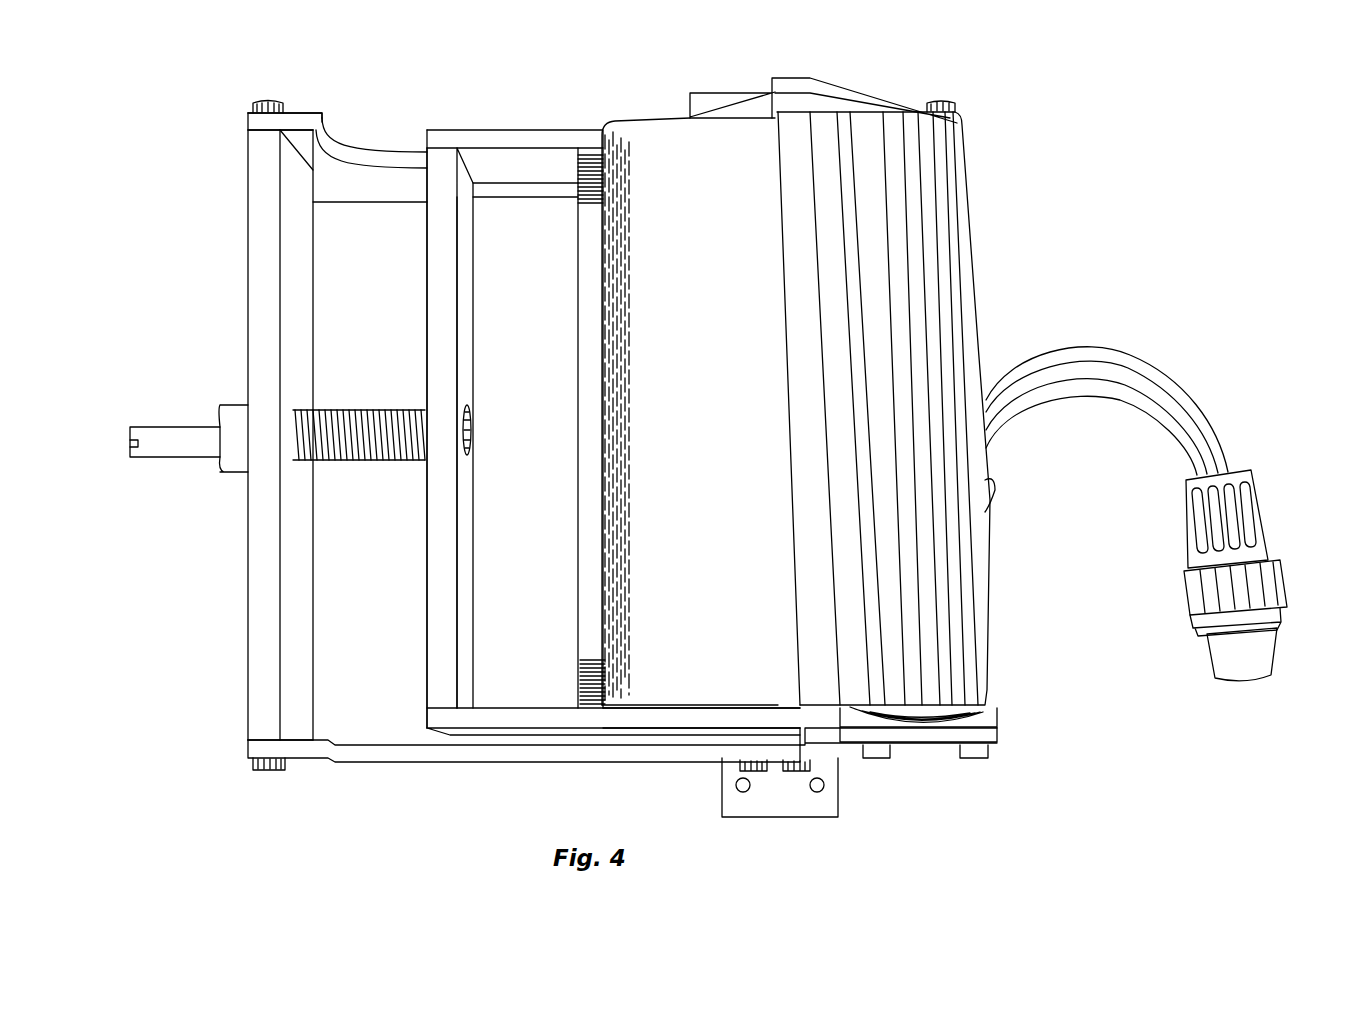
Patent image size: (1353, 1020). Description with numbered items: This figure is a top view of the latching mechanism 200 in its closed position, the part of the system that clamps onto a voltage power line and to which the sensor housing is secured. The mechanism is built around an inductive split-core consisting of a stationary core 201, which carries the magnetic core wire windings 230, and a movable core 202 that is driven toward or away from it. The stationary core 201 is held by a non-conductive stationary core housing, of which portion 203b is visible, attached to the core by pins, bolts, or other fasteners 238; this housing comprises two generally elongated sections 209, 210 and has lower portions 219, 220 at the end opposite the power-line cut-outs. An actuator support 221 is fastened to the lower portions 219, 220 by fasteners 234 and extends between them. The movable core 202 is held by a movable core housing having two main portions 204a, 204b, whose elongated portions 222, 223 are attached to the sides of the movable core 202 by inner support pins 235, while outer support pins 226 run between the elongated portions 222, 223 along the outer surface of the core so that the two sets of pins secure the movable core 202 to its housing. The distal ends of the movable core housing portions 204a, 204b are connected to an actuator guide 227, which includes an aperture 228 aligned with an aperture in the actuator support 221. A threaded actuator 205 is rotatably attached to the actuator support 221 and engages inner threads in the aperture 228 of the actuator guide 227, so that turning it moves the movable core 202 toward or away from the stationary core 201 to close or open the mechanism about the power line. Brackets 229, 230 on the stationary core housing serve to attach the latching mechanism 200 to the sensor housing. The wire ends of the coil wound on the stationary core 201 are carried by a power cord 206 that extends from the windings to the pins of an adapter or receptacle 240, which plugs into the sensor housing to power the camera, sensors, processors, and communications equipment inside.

The latching mechanism 200 is at (611, 54).
The stationary core 201 is at (918, 306).
The movable core 202 is at (730, 460).
The stationary core housing portion 203b is at (788, 85).
The movable core housing portion 204a is at (510, 720).
The movable core housing portion 204b is at (458, 138).
The actuator 205 is at (170, 442).
The power cord 206 is at (1132, 358).
The elongated section 209 is at (420, 752).
The elongated section 210 is at (400, 150).
The lower portion 219 is at (307, 752).
The lower portion 220 is at (305, 140).
The actuator support 221 is at (262, 576).
The elongated portion 222 is at (622, 722).
The elongated portion 223 is at (520, 165).
The outer support pins 226 is at (590, 302).
The actuator guide 227 is at (440, 553).
The aperture 228 is at (475, 432).
The bracket 229 is at (713, 106).
The magnetic core wire windings 230 is at (805, 820).
The fasteners 234 is at (264, 100).
The inner support pins 235 is at (300, 407).
The fasteners 238 is at (873, 760).
The adapter or receptacle 240 is at (1251, 522).